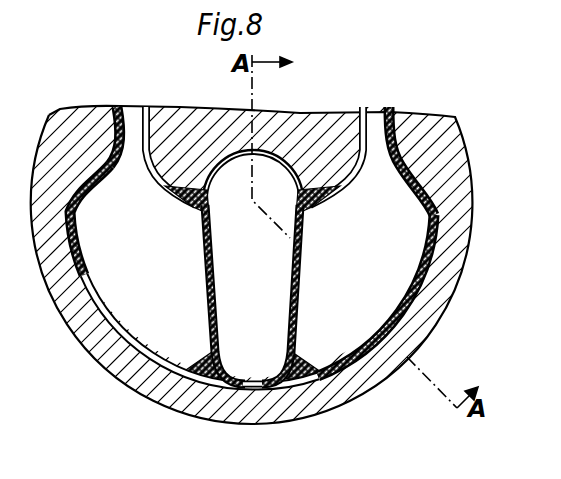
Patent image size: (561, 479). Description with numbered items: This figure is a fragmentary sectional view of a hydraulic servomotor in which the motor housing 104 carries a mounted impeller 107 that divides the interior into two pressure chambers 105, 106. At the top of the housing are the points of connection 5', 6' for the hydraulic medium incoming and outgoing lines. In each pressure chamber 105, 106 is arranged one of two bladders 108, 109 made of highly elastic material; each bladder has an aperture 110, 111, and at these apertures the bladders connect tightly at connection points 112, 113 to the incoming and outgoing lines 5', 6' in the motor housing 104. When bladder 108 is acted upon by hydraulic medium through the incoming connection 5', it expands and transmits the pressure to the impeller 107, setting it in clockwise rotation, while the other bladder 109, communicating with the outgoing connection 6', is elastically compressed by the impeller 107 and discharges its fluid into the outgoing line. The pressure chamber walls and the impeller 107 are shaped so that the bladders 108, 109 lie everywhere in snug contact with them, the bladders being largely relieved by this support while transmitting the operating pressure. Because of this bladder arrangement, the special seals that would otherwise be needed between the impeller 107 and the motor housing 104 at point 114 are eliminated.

The motor housing 104 is at (180, 115).
The pressure chamber 105 is at (340, 358).
The pressure chamber 106 is at (107, 328).
The impeller 107 is at (263, 330).
The bladder 108 is at (300, 233).
The bladder 109 is at (83, 272).
The aperture 110 is at (380, 148).
The aperture 111 is at (103, 107).
The connection point 112 is at (395, 135).
The connection point 113 is at (115, 107).
The sealing point 114 is at (245, 392).
The connection point of incoming line 5' is at (393, 90).
The connection point of outgoing line 6' is at (140, 103).